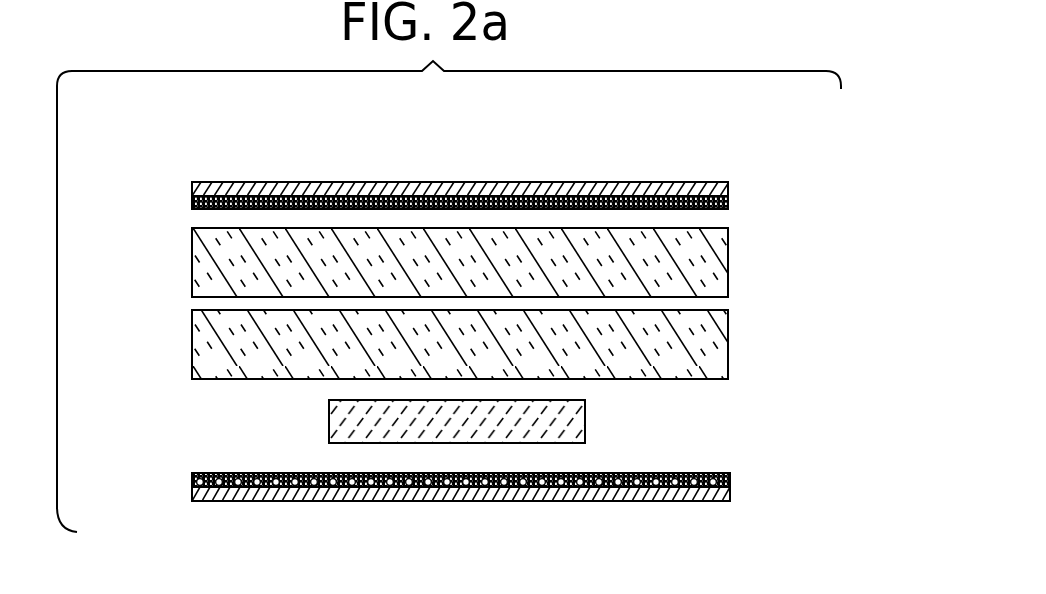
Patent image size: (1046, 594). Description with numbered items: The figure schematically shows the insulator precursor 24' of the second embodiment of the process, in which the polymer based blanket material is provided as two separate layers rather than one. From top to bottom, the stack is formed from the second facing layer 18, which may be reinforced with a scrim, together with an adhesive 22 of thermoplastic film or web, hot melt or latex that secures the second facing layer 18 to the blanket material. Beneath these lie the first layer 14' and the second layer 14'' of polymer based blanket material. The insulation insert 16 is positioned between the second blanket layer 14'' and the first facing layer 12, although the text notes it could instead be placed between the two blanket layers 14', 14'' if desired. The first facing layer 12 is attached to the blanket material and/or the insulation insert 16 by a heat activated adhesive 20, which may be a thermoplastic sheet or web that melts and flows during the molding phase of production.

The first facing layer 12 is at (643, 501).
The first layer of polymer based blanket material 14' is at (513, 262).
The second layer of polymer based blanket material 14'' is at (516, 344).
The insulation insert 16 is at (580, 412).
The second facing layer 18 is at (357, 181).
The heat activated adhesive 20 is at (655, 473).
The adhesive 22 is at (728, 197).
The insulator precursor 24' is at (489, 296).